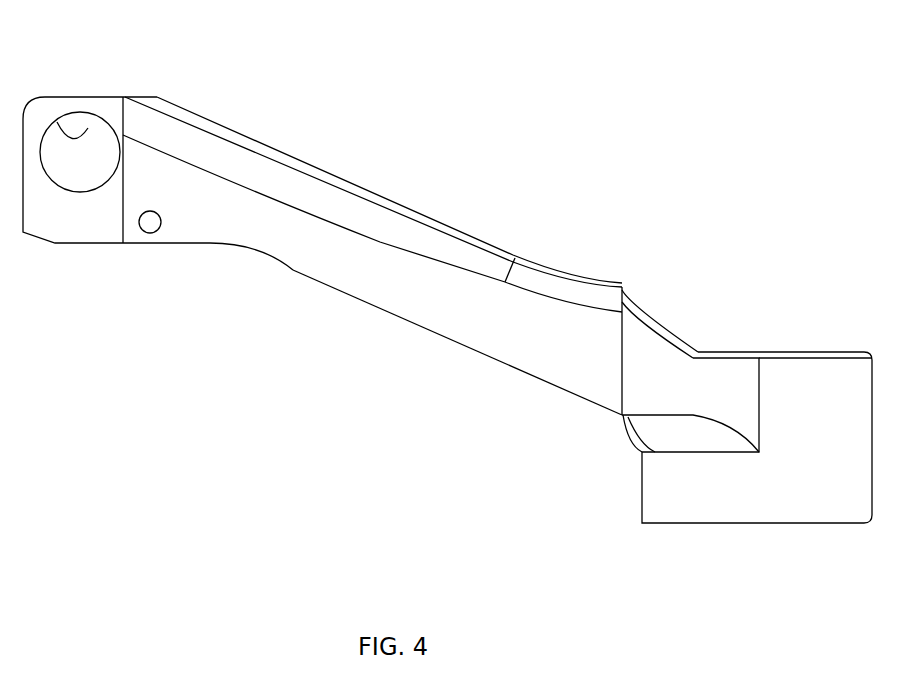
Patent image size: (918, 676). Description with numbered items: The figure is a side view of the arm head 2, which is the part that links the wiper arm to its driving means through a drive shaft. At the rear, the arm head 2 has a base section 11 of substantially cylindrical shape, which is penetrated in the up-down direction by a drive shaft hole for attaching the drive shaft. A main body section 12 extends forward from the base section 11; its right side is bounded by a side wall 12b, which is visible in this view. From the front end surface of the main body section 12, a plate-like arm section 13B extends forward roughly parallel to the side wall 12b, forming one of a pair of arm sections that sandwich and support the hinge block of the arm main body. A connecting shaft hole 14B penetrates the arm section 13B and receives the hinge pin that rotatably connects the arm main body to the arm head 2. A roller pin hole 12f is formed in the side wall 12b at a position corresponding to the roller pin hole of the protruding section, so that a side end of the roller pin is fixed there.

The arm head 2 is at (577, 138).
The base section 11 is at (810, 523).
The main body section 12 is at (375, 306).
The side wall 12b is at (297, 242).
The roller pin hole 12f is at (150, 233).
The arm section 13B is at (55, 240).
The connecting shaft hole 14B is at (88, 125).